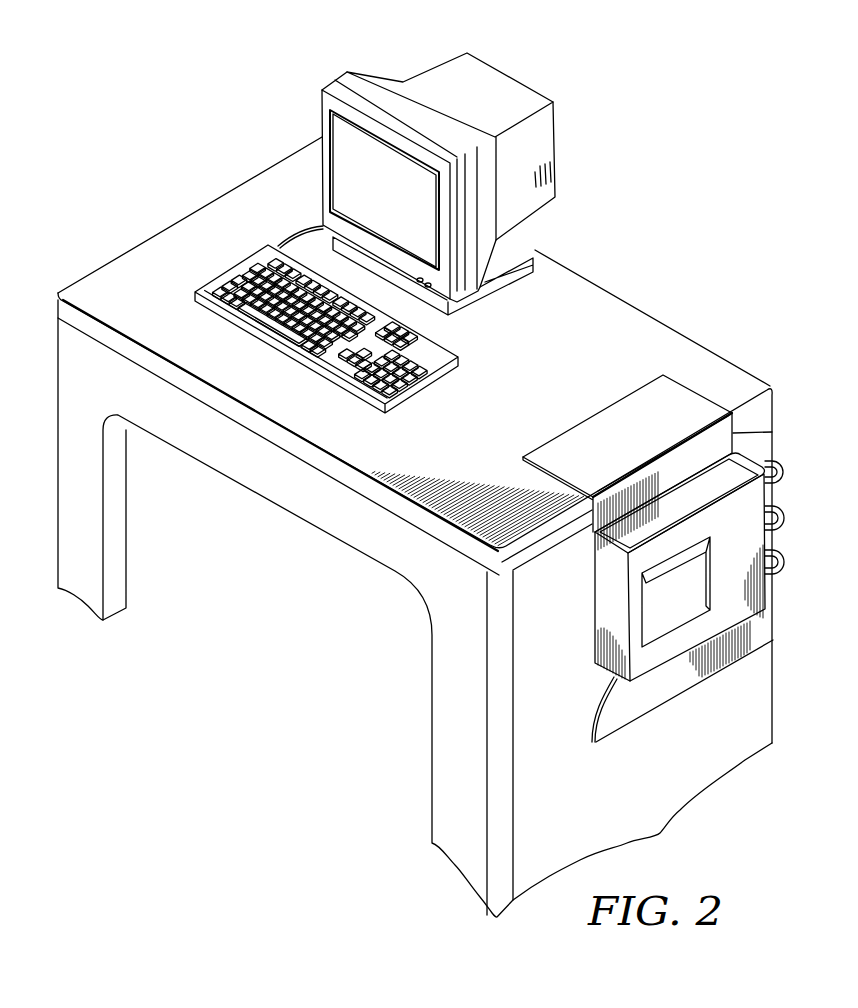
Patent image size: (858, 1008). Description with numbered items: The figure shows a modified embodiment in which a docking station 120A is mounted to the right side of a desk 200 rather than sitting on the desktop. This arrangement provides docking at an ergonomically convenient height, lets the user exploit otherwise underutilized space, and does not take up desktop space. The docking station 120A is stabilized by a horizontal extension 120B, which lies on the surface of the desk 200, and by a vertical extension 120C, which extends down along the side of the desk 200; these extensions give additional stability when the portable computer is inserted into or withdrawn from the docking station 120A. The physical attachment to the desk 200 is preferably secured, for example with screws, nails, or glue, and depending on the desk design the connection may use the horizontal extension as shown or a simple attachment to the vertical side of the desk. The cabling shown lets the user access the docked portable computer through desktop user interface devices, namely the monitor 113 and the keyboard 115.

The monitor 113 is at (330, 83).
The keyboard 115 is at (245, 257).
The desk 200 is at (610, 305).
The modified docking station 120A is at (760, 597).
The horizontal extension 120B is at (560, 447).
The vertical extension 120C is at (667, 685).